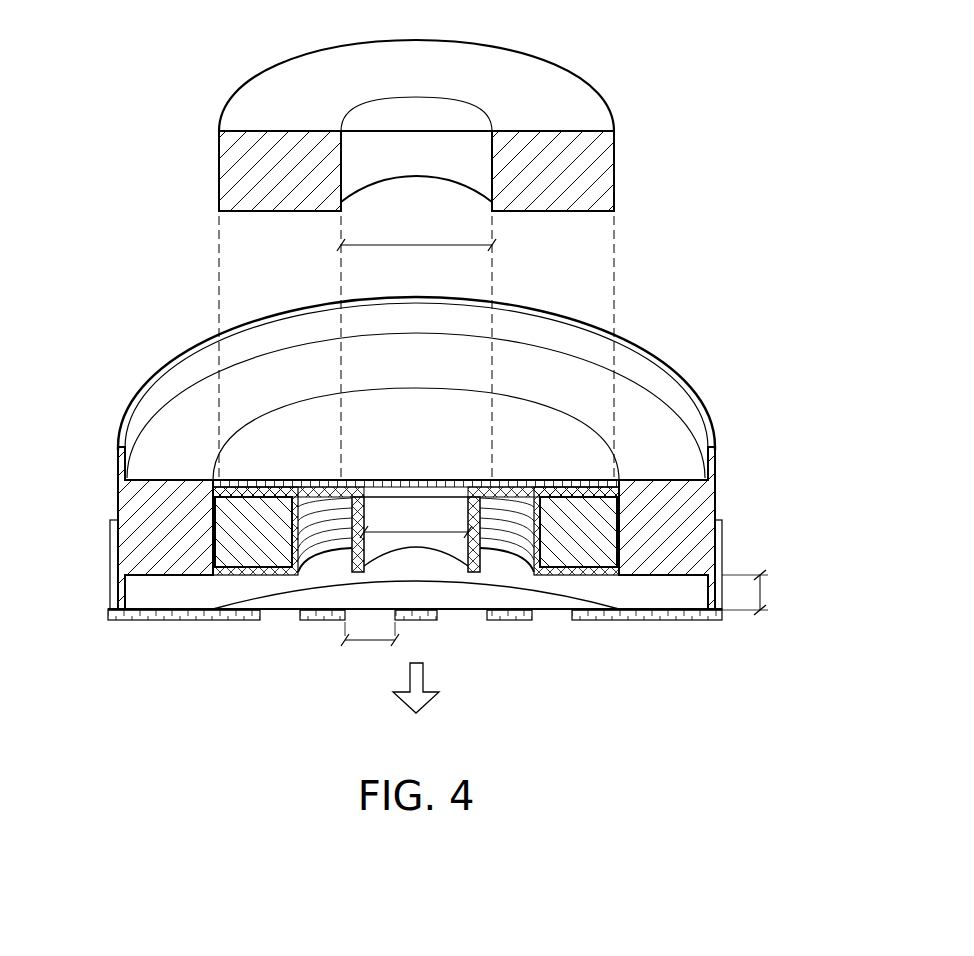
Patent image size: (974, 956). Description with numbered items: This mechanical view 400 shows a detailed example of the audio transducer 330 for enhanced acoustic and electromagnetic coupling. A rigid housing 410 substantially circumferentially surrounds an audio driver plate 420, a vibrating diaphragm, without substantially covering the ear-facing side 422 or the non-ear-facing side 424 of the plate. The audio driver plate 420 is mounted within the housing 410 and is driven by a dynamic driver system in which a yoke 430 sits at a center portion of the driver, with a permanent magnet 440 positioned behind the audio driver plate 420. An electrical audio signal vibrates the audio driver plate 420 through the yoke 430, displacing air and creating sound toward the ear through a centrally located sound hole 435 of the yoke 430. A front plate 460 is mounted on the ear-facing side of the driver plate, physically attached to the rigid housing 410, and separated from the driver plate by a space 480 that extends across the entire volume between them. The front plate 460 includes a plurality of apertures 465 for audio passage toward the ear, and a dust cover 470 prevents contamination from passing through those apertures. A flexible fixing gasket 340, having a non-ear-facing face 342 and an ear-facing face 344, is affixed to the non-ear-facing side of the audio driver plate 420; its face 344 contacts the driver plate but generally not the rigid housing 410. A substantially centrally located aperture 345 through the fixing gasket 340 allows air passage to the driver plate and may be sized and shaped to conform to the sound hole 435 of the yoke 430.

The audio transducer 330 is at (177, 346).
The fixing gasket 340 is at (417, 250).
The non-ear-facing face of the fixing gasket 342 is at (556, 86).
The ear-facing face of the fixing gasket 344 is at (535, 215).
The aperture of the fixing gasket 345 is at (416, 234).
The speaker assembly 400 is at (526, 391).
The rigid housing 410 is at (720, 473).
The audio driver plate 420 is at (383, 406).
The ear-facing side of the audio driver plate 422 is at (593, 469).
The non-ear-facing side of the audio driver plate 424 is at (566, 485).
The yoke 430 is at (584, 499).
The sound hole 435 is at (416, 522).
The permanent magnet 440 is at (259, 523).
The front plate 460 is at (237, 577).
The apertures 465 is at (370, 645).
The dust cover 470 is at (461, 596).
The space 480 is at (763, 592).